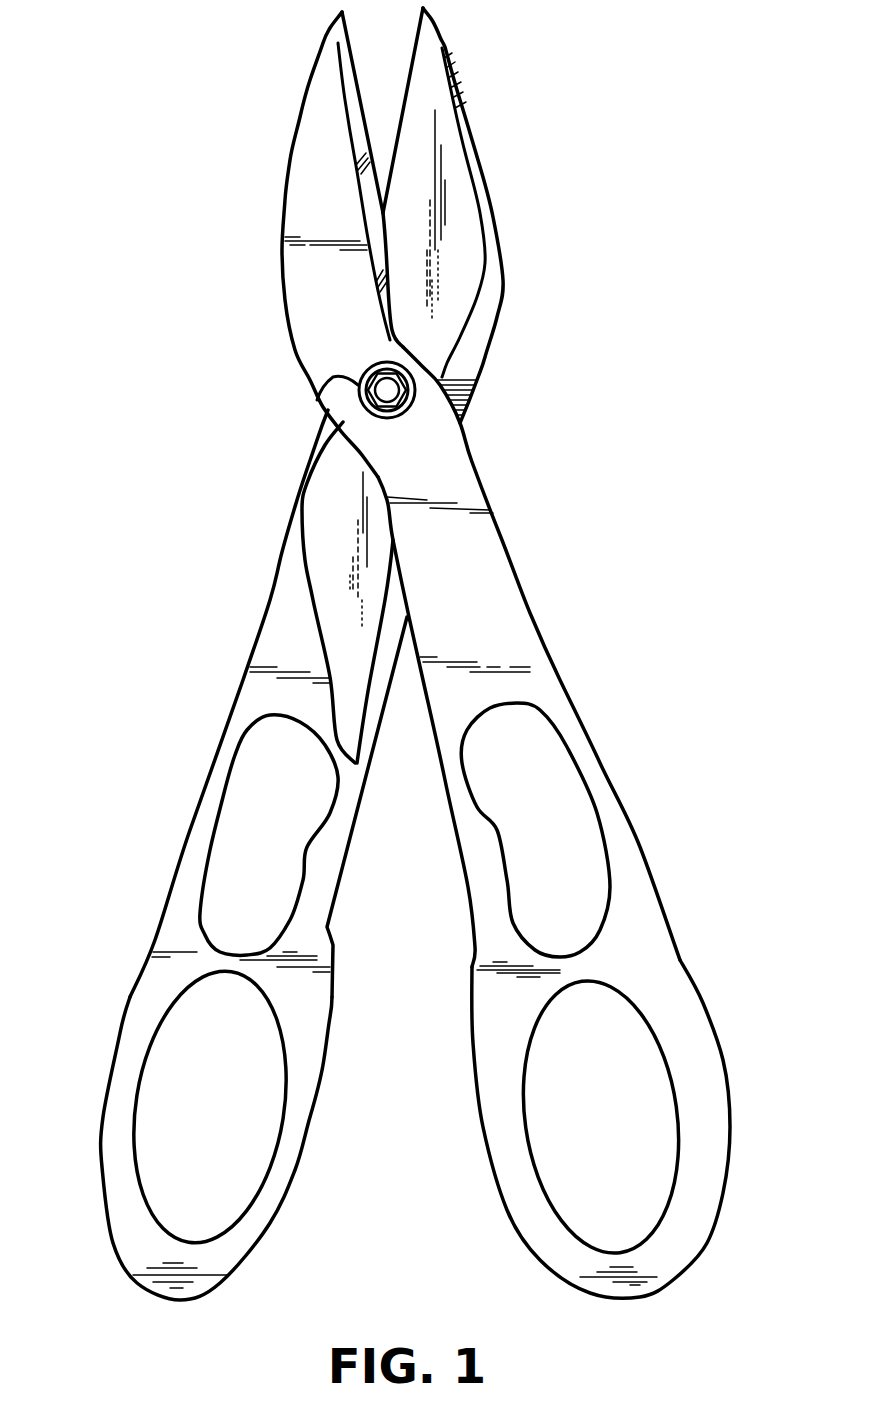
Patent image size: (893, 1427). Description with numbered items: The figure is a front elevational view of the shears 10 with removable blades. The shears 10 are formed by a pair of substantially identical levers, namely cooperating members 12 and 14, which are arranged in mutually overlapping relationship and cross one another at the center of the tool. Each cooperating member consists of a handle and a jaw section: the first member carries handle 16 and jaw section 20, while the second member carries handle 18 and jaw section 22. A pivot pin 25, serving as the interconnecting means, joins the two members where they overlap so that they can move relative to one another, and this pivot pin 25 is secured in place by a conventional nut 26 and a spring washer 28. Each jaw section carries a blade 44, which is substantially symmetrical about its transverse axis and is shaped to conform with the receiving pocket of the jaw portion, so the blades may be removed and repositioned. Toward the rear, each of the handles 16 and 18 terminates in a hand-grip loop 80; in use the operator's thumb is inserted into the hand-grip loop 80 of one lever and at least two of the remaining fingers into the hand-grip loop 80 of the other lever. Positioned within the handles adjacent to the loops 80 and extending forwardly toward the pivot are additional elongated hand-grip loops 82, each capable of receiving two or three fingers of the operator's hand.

The shears 10 is at (588, 508).
The cooperating member 12 is at (523, 641).
The cooperating member 14 is at (287, 621).
The handle 16 is at (710, 1205).
The handle 18 is at (117, 1205).
The jaw section 20 is at (487, 347).
The jaw section 22 is at (305, 313).
The pivot pin 25 is at (317, 400).
The nut 26 is at (408, 407).
The spring washer 28 is at (371, 414).
The blade 44 is at (350, 68).
The hand-grip loop 80 is at (263, 1128).
The hand-grip loop 82 is at (313, 813).